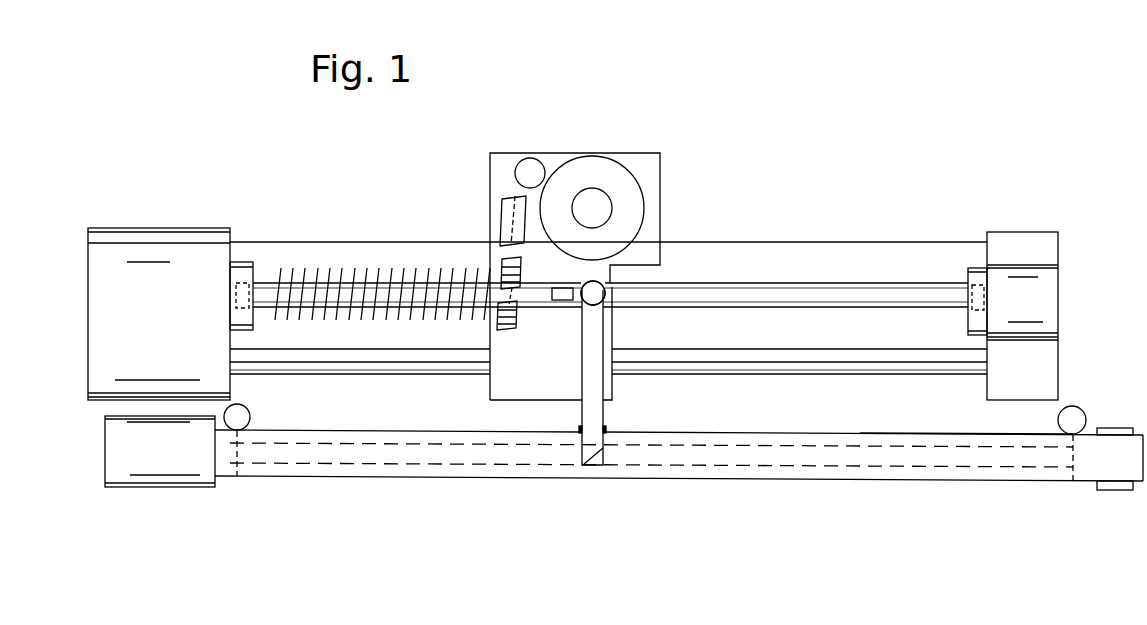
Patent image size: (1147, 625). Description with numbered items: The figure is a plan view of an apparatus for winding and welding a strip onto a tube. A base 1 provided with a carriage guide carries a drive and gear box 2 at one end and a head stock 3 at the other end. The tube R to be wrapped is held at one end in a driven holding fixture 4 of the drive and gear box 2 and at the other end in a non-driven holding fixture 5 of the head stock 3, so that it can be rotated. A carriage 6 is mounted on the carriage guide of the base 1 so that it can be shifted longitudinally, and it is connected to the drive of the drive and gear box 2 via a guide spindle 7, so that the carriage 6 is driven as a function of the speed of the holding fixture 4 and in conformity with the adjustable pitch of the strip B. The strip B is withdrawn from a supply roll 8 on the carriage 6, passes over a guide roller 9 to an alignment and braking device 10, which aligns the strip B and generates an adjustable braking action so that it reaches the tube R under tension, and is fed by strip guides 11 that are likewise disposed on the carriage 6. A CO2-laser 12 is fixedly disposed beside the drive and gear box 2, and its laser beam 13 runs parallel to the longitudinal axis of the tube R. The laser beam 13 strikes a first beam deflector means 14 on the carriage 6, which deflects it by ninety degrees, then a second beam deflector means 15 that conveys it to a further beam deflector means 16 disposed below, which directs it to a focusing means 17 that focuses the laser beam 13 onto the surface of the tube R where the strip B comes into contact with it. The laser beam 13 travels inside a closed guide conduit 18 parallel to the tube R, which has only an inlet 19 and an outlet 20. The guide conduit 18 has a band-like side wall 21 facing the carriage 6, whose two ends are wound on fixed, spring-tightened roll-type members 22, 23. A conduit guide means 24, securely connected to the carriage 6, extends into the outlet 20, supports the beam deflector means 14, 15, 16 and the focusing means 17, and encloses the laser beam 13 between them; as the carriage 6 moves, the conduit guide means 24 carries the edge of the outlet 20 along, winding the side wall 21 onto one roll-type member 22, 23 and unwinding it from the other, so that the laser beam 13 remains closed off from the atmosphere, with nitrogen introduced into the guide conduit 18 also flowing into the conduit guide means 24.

The base 1 is at (757, 256).
The drive and gear box 2 is at (162, 244).
The head stock 3 is at (1037, 278).
The driven holding fixture 4 is at (242, 268).
The non-driven holding fixture 5 is at (979, 276).
The carriage 6 is at (518, 390).
The guide spindle 7 is at (770, 376).
The supply roll 8 is at (593, 172).
The guide roller 9 is at (527, 163).
The alignment and braking device 10 is at (508, 200).
The strip guides 11 is at (500, 304).
The CO2-laser 12 is at (158, 472).
The laser beam 13 is at (355, 452).
The first beam deflector means 14 is at (586, 462).
The second beam deflector means 15 is at (600, 286).
The further beam deflector means 16 is at (600, 286).
The focusing means 17 is at (562, 302).
The guide conduit 18 is at (930, 481).
The inlet 19 is at (239, 477).
The outlet 20 is at (604, 446).
The band-like side wall 21 is at (879, 432).
The roll-type member 22 is at (250, 417).
The roll-type member 23 is at (1074, 416).
The conduit guide means 24 is at (605, 333).
The strip B is at (556, 156).
The tube R is at (827, 290).